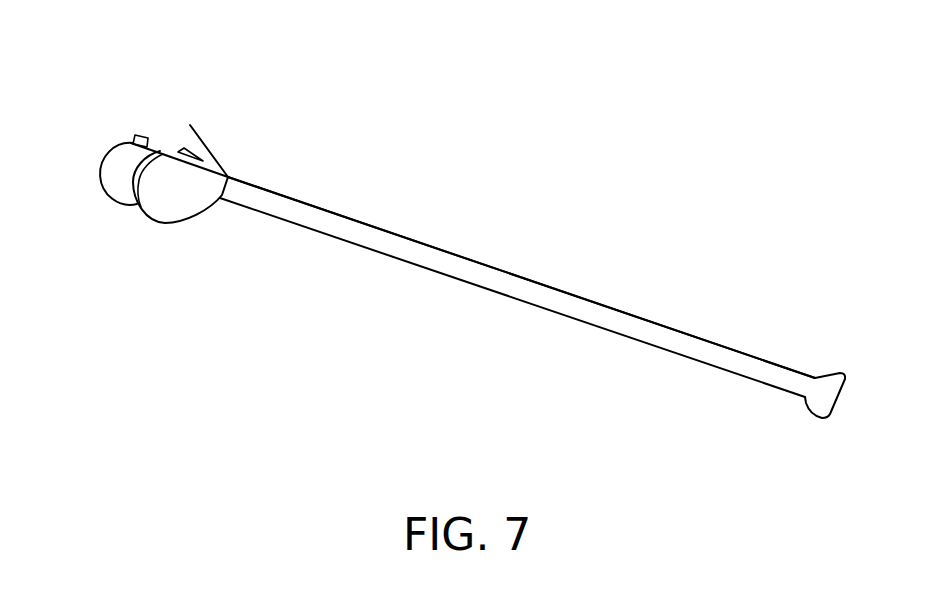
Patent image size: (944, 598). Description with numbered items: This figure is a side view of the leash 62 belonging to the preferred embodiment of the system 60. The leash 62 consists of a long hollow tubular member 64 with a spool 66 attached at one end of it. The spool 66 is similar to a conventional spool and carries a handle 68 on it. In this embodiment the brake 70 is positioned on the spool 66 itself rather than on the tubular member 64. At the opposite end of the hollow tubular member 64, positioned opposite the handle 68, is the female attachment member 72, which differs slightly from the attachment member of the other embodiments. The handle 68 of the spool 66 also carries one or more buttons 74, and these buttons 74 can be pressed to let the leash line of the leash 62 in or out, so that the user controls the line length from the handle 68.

The system 60 is at (431, 167).
The leash 62 is at (615, 307).
The hollow tubular member 64 is at (508, 270).
The spool 66 is at (162, 152).
The handle 68 is at (102, 163).
The brake 70 is at (211, 142).
The female attachment member 72 is at (830, 382).
The buttons 74 is at (137, 133).